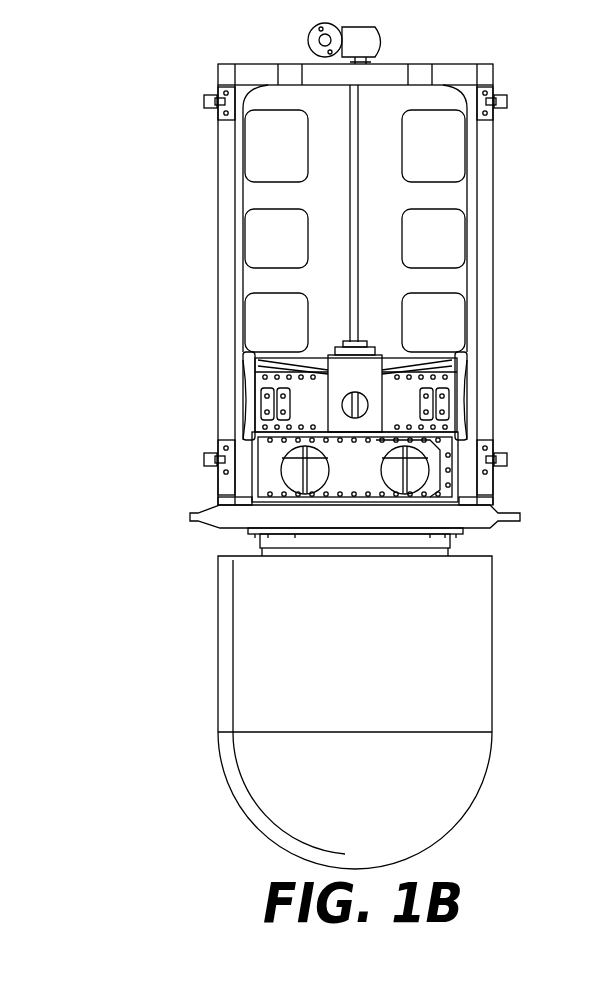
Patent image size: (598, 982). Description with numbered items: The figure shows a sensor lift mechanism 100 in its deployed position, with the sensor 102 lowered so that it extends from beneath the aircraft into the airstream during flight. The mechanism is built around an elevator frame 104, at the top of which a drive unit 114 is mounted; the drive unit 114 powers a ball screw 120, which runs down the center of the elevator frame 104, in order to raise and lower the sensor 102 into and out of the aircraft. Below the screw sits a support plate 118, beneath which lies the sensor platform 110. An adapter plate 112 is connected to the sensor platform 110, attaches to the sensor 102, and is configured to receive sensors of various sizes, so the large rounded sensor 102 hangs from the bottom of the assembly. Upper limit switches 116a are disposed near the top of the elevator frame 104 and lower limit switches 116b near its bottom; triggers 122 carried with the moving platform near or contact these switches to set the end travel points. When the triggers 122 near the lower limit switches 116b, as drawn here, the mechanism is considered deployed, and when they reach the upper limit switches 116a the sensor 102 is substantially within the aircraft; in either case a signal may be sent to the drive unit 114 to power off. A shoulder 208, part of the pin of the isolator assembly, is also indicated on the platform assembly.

The sensor lift mechanism 100 is at (222, 838).
The sensor 102 is at (237, 742).
The elevator frame 104 is at (218, 270).
The sensor platform 110 is at (248, 528).
The adapter plate 112 is at (300, 538).
The drive unit 114 is at (288, 35).
The upper limit switches 116a is at (204, 101).
The lower limit switches 116b is at (205, 462).
The support plate 118 is at (368, 494).
The ball screw 120 is at (352, 236).
The triggers 122 is at (243, 354).
The shoulder 208 is at (300, 398).